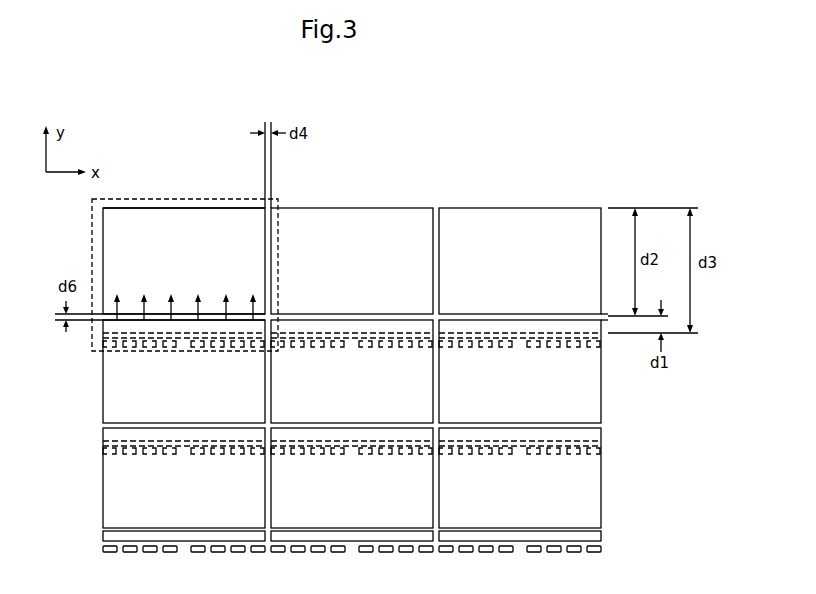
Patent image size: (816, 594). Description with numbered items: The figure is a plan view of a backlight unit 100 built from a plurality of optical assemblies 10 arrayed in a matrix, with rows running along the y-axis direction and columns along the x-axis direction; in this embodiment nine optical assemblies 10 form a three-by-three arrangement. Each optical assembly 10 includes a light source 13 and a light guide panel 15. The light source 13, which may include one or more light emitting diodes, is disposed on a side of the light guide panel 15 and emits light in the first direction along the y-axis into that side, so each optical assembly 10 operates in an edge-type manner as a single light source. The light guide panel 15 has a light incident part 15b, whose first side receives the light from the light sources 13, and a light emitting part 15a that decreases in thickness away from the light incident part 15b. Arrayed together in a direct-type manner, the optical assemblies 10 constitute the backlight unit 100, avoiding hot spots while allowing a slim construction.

The backlight unit 100 is at (508, 178).
The optical assembly 10 is at (137, 199).
The light source 13 is at (128, 343).
The light guide panel 15 is at (228, 212).
The light emitting part 15a is at (188, 218).
The light incident part 15b is at (131, 318).